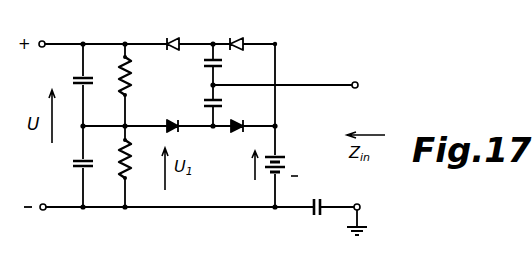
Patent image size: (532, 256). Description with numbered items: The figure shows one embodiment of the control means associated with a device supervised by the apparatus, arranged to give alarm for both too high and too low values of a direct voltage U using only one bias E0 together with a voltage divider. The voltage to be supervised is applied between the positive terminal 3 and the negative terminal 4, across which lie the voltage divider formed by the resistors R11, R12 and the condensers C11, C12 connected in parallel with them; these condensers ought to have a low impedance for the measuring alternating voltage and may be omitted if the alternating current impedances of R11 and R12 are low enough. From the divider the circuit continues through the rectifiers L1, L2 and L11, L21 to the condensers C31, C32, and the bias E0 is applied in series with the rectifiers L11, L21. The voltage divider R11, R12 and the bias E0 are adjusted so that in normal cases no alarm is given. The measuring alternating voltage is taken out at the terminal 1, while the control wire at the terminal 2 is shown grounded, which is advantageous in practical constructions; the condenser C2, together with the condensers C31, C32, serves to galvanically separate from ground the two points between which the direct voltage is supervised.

The output terminal 1 is at (293, 87).
The ground terminal 2 is at (361, 216).
The positive input terminal 3 is at (41, 31).
The negative input terminal 4 is at (42, 194).
The condenser C11 is at (73, 69).
The condenser C12 is at (74, 153).
The condenser C31 is at (226, 67).
The condenser C32 is at (226, 101).
The condenser C2 is at (314, 223).
The resistor R11 is at (140, 76).
The resistor R12 is at (140, 159).
The rectifier L1 is at (174, 31).
The rectifier L11 is at (242, 31).
The rectifier L2 is at (173, 116).
The rectifier L21 is at (251, 119).
The bias E0 is at (262, 163).